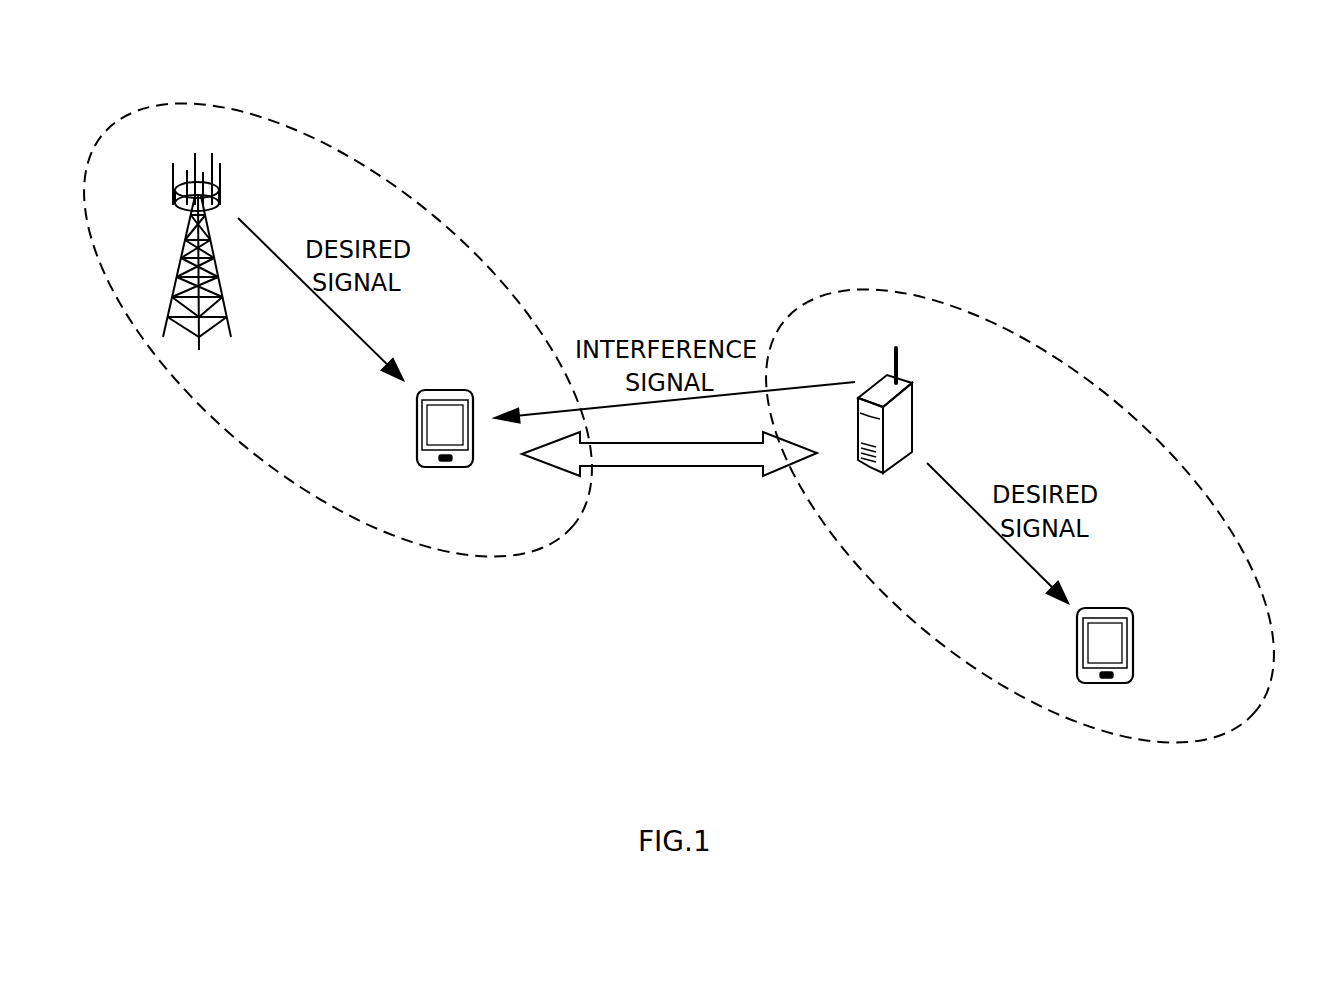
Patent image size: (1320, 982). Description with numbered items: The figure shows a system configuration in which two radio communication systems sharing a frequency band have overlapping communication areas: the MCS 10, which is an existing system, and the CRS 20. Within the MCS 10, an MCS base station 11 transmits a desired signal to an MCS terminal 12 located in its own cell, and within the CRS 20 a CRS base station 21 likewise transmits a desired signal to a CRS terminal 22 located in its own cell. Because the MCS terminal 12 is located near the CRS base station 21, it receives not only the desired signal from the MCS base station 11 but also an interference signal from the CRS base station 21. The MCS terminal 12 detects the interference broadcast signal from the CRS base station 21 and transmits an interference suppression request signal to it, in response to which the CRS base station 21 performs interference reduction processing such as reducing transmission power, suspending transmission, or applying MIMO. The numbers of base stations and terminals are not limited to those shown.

The MCS MCS10 is at (337, 330).
The CRS CRS20 is at (1004, 516).
The MCS base station 11 is at (180, 252).
The MCS terminal 12 is at (452, 390).
The CRS base station 21 is at (913, 410).
The CRS terminal 22 is at (1113, 608).